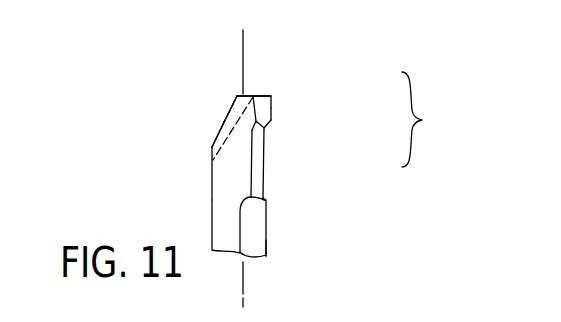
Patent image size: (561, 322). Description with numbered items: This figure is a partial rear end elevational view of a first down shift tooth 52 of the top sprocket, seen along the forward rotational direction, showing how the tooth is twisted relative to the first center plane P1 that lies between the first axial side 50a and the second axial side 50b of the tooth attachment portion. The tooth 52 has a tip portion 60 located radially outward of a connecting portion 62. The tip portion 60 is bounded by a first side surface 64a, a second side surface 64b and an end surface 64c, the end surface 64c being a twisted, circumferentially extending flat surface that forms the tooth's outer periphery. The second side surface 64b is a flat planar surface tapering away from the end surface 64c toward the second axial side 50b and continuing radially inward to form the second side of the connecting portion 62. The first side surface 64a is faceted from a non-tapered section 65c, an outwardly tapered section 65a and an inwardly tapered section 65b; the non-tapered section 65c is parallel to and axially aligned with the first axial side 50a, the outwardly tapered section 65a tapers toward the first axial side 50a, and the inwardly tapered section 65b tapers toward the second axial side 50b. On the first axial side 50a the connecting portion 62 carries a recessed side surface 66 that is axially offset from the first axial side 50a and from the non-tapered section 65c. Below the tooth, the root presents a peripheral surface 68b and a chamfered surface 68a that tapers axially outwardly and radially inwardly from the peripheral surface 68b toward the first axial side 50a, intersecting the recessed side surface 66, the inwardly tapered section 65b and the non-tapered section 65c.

The first tooth 52 is at (303, 91).
The first center plane P1 is at (245, 43).
The end surface 64c is at (241, 94).
The tip portion 60 is at (228, 109).
The second side surface 64b is at (224, 124).
The connecting portion 62 is at (208, 153).
The second axial side 50b is at (211, 233).
The non-tapered section 65c is at (272, 102).
The outwardly tapered section 65a is at (271, 113).
The inwardly tapered section 65b is at (265, 130).
The first side surface 64a is at (437, 119).
The recessed side surface 66 is at (265, 165).
The peripheral surface 68b is at (226, 233).
The chamfered surface 68a is at (255, 243).
The first axial side 50a is at (270, 243).